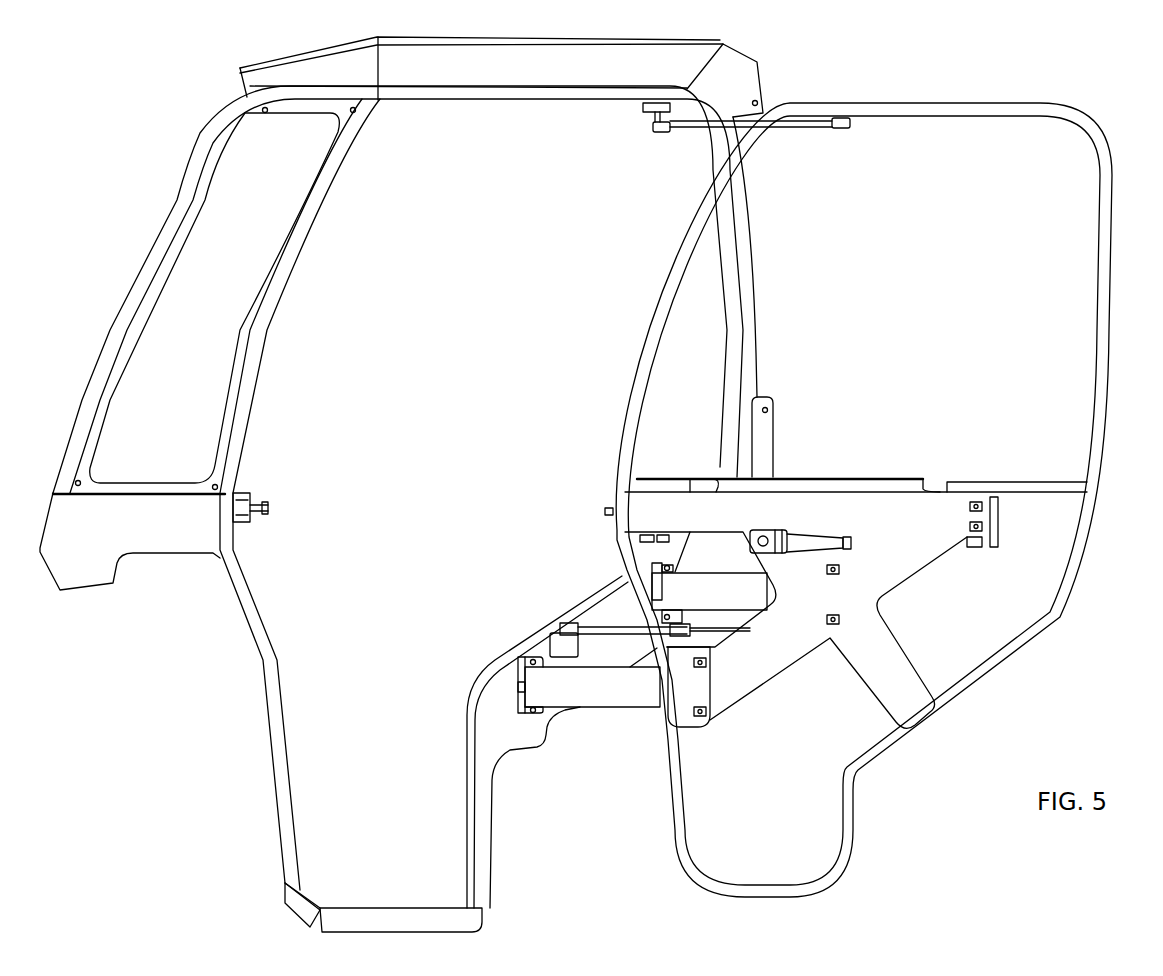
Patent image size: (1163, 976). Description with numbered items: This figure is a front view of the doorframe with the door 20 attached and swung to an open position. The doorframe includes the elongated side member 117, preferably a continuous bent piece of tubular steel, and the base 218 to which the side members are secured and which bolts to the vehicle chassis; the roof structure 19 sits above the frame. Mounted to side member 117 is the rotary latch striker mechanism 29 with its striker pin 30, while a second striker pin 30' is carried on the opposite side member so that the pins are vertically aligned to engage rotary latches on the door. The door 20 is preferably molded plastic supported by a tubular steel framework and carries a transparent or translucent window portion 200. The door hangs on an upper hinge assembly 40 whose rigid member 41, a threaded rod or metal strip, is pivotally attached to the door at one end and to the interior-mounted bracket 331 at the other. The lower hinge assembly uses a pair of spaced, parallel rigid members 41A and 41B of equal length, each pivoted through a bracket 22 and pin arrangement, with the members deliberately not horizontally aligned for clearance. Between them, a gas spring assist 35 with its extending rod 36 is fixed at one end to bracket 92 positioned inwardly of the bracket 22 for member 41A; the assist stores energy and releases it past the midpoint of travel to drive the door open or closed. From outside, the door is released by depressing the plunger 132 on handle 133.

The roof 19 is at (578, 62).
The elongated side member 117 is at (258, 605).
The base 218 is at (383, 915).
The window portion 200 is at (1067, 312).
The door 20 is at (972, 608).
The plunger 132 is at (763, 531).
The handle 133 is at (810, 543).
The rigid member 41B is at (698, 606).
The rigid member 41A is at (606, 697).
The bracket 22 is at (671, 569).
The assist 35 is at (615, 627).
The rod 36 is at (716, 633).
The bracket 92 is at (572, 651).
The striker pin 30' is at (588, 529).
The striker pin 30 is at (258, 517).
The rotary latch striker mechanism 29 is at (266, 487).
The bracket 331 is at (642, 112).
The rigid member 41 is at (692, 131).
The upper hinge assembly 40 is at (756, 149).